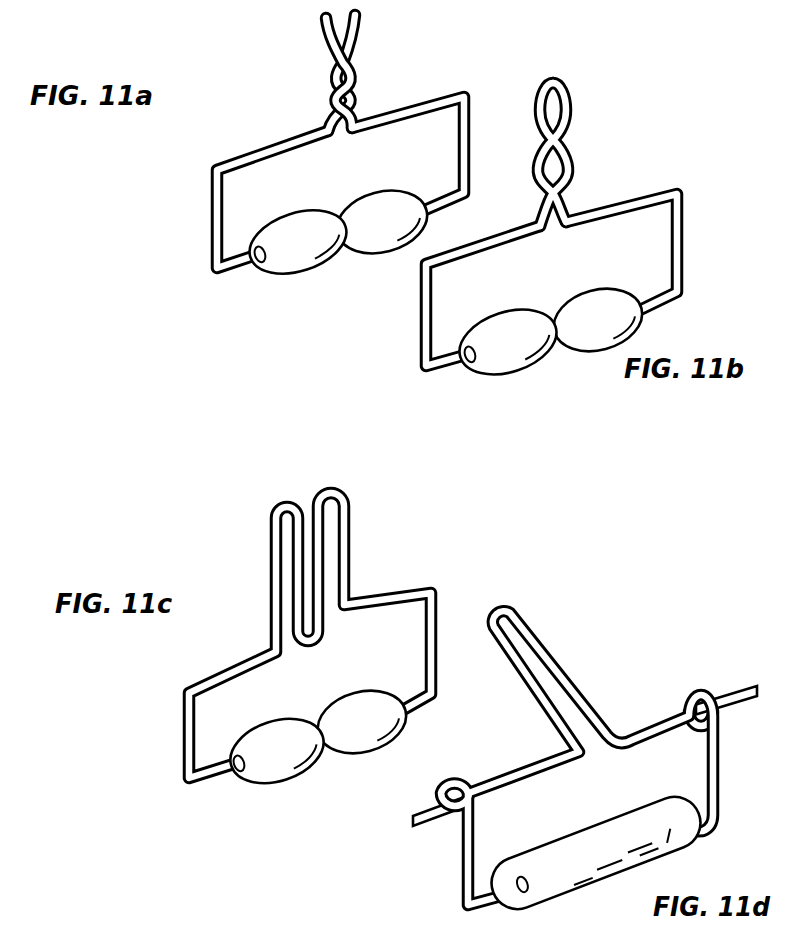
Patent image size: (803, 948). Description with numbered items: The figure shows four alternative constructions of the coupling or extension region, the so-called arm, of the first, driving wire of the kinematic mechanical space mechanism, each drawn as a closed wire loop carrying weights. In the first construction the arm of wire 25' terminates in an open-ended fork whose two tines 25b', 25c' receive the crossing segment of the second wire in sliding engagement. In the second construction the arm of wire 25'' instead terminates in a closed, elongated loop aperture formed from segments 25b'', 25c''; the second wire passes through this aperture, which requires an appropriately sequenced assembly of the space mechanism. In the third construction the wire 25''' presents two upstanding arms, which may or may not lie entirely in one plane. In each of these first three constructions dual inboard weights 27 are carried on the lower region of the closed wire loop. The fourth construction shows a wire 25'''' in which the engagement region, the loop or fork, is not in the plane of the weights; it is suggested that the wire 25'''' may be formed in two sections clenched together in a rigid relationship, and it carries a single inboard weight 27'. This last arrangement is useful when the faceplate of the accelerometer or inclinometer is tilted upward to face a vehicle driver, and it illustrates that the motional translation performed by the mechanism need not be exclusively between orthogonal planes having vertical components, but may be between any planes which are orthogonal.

In FIG. 11A, the wire 25' is at (314, 182).
In FIG. 11A, the tine 25b' is at (311, 73).
In FIG. 11A, the tine 25c' is at (370, 73).
In FIG. 11A, the weights 27 is at (337, 233).
In FIG. 11B, the weights 27 is at (550, 332).
In FIG. 11C, the weights 27 is at (317, 737).
In FIG. 11B, the wire 25'' is at (524, 280).
In FIG. 11B, the segment 25b'' is at (530, 154).
In FIG. 11B, the segment 25c'' is at (587, 152).
In FIG. 11C, the wire 25''' is at (280, 635).
In FIG. 11D, the wire 25'''' is at (558, 758).
In FIG. 11D, the weight 27' is at (596, 852).